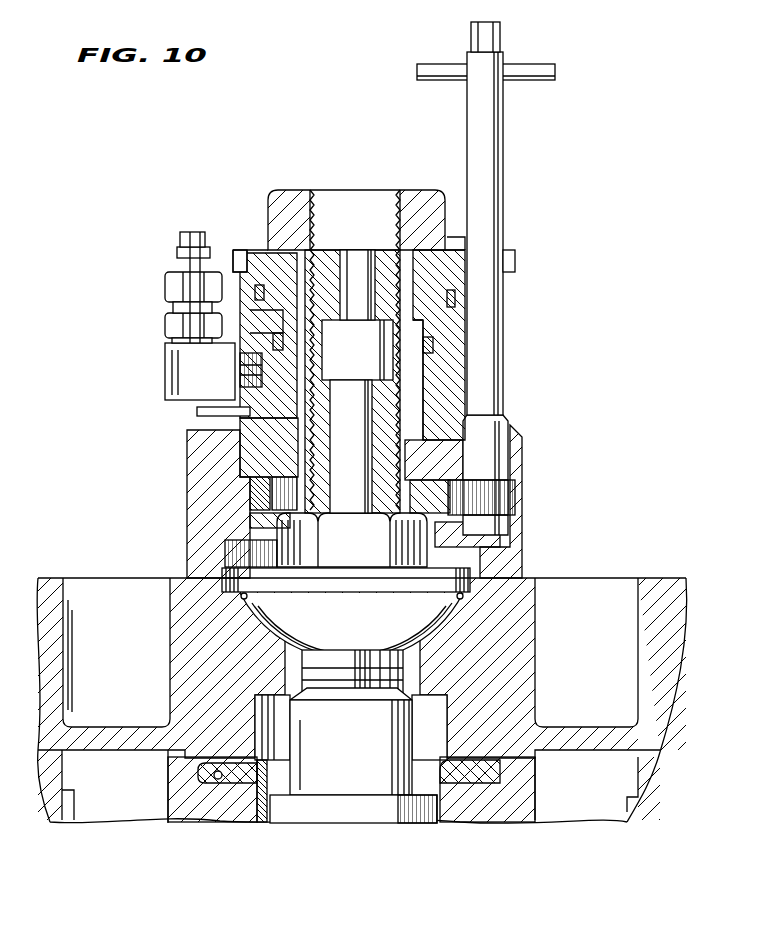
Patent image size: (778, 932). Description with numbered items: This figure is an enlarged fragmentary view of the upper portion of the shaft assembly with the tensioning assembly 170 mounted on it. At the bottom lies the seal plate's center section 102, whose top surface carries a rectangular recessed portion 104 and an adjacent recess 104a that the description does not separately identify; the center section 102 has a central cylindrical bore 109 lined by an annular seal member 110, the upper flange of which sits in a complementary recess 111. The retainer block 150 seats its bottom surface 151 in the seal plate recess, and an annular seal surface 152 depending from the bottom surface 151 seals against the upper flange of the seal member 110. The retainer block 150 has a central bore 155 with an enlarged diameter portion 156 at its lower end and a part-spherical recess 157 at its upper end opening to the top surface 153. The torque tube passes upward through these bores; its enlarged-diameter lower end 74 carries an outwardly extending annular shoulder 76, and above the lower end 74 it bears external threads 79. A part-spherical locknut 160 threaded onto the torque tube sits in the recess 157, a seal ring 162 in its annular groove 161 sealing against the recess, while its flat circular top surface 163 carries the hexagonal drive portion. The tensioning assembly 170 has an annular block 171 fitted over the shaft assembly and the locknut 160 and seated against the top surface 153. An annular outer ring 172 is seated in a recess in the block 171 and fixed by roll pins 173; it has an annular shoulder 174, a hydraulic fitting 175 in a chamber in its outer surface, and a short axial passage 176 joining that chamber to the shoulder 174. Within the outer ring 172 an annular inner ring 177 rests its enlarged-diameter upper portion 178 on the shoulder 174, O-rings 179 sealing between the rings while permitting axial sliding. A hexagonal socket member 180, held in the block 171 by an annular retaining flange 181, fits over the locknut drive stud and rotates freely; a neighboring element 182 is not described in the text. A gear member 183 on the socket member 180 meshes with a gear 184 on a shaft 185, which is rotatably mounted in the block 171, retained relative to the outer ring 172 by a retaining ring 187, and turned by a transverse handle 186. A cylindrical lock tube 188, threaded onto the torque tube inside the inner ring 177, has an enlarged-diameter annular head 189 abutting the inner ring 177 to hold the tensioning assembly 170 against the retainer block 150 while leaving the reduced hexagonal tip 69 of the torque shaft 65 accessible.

The tensioning assembly 170 is at (128, 190).
The enlarged-diameter annular head 189 is at (283, 198).
The reduced hexagonal tip 69 is at (355, 262).
The transverse handle 186 is at (547, 66).
The shaft 185 is at (495, 215).
The retaining ring 187 is at (515, 262).
The enlarged-diameter upper portion 178 is at (446, 275).
The O-rings 179 is at (455, 298).
The annular shoulder 174 is at (428, 322).
The annular inner ring 177 is at (430, 392).
The torque shaft 65 is at (366, 432).
The cylindrical lock tube 188 is at (478, 450).
The gear 184 is at (480, 493).
The hydraulic fitting 175 is at (166, 372).
The short axial passage 176 is at (262, 342).
The annular outer ring 172 is at (245, 409).
The roll pins 173 is at (210, 432).
The gear member 183 is at (252, 492).
The annular retaining flange 181 is at (272, 505).
The annular block 171 is at (195, 516).
The retainer ring 182 is at (240, 530).
The hexagonal socket member 180 is at (396, 492).
The flat circular top surface 163 is at (345, 576).
The retainer block 150 is at (47, 578).
The top surface 153 is at (676, 578).
The part-spherical recess 157 is at (250, 612).
The seal ring 162 is at (265, 596).
The annular groove 161 is at (352, 595).
The part-spherical locknut 160 is at (285, 628).
The external threads 79 is at (330, 690).
The central cylindrical bore 155 is at (398, 683).
The enlarged diameter portion 156 is at (448, 718).
The annular seal surface 152 is at (285, 770).
The bottom surface 151 is at (137, 760).
The lower recess 104a is at (535, 757).
The rectangular recessed portion 104 is at (652, 748).
The center section 102 is at (112, 808).
The complementary recess 111 is at (205, 810).
The annular seal member 110 is at (261, 822).
The annular shoulder 76 is at (319, 812).
The enlarged-diameter lower end 74 is at (362, 782).
The central cylindrical bore 109 is at (448, 810).